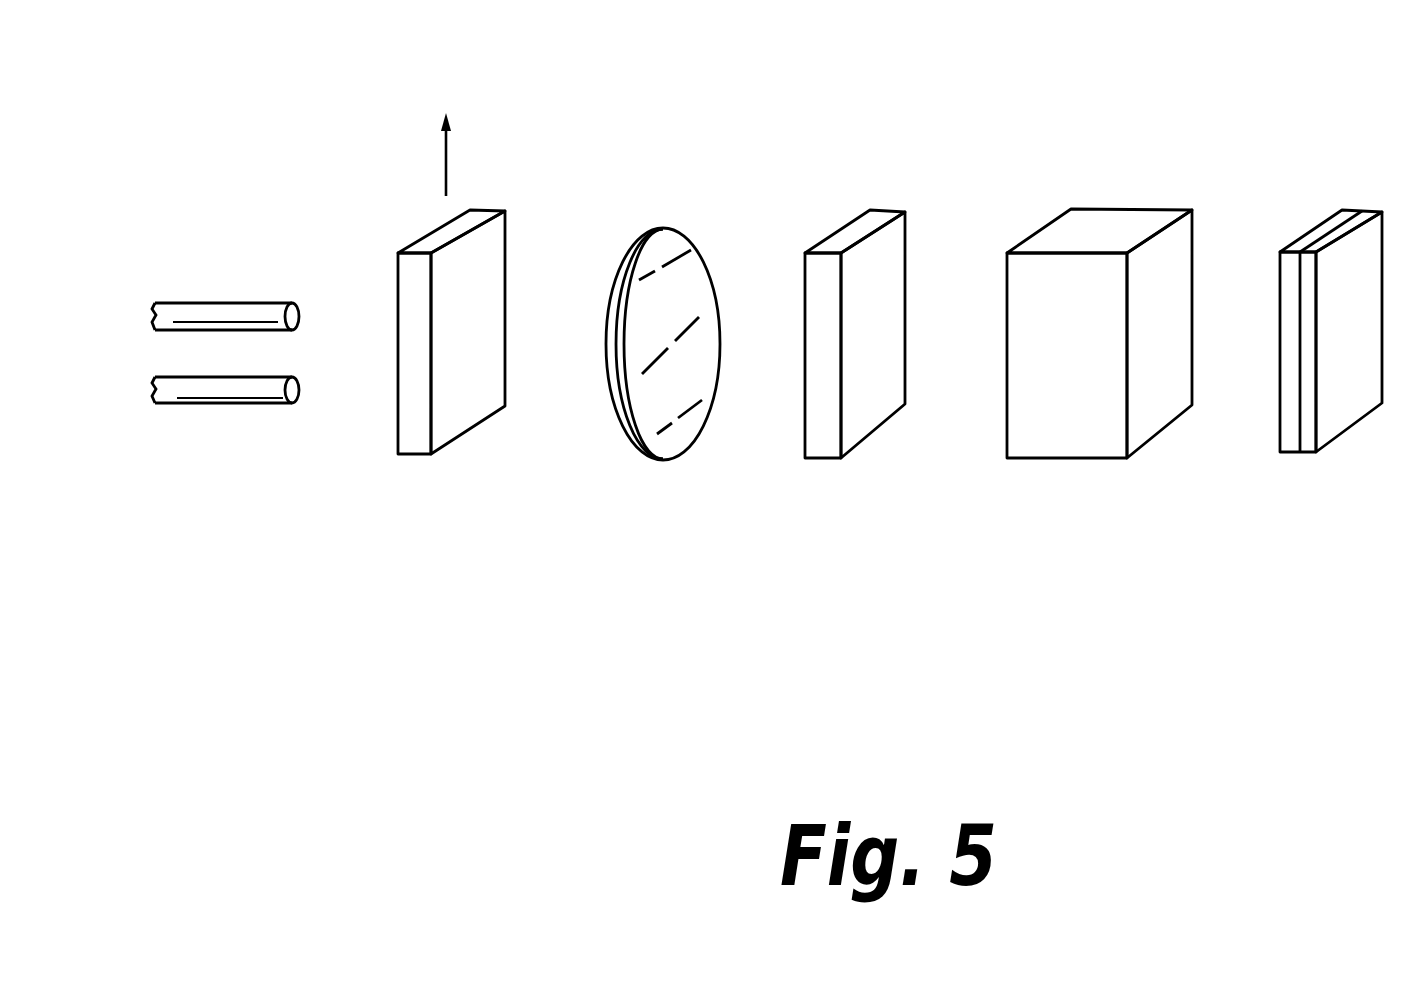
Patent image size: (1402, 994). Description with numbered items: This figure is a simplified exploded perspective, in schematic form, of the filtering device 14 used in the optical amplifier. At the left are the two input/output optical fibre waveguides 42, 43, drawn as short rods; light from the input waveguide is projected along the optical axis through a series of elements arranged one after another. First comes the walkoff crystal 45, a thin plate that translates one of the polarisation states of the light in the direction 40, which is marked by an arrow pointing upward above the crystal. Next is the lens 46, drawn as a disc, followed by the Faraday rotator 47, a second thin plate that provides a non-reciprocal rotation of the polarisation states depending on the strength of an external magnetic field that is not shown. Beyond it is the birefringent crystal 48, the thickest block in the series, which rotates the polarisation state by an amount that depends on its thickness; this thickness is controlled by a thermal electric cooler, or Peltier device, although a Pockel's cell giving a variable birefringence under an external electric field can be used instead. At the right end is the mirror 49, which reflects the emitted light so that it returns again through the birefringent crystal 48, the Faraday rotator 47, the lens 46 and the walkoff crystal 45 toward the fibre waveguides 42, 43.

The filtering device 14 is at (1260, 117).
The direction 40 is at (446, 172).
The input/output optical fibre waveguide 42 is at (255, 387).
The input/output optical fibre waveguide 43 is at (230, 307).
The walkoff crystal 45 is at (419, 456).
The lens 46 is at (678, 460).
The Faraday rotator 47 is at (878, 431).
The birefringent crystal 48 is at (1082, 459).
The mirror 49 is at (1296, 454).